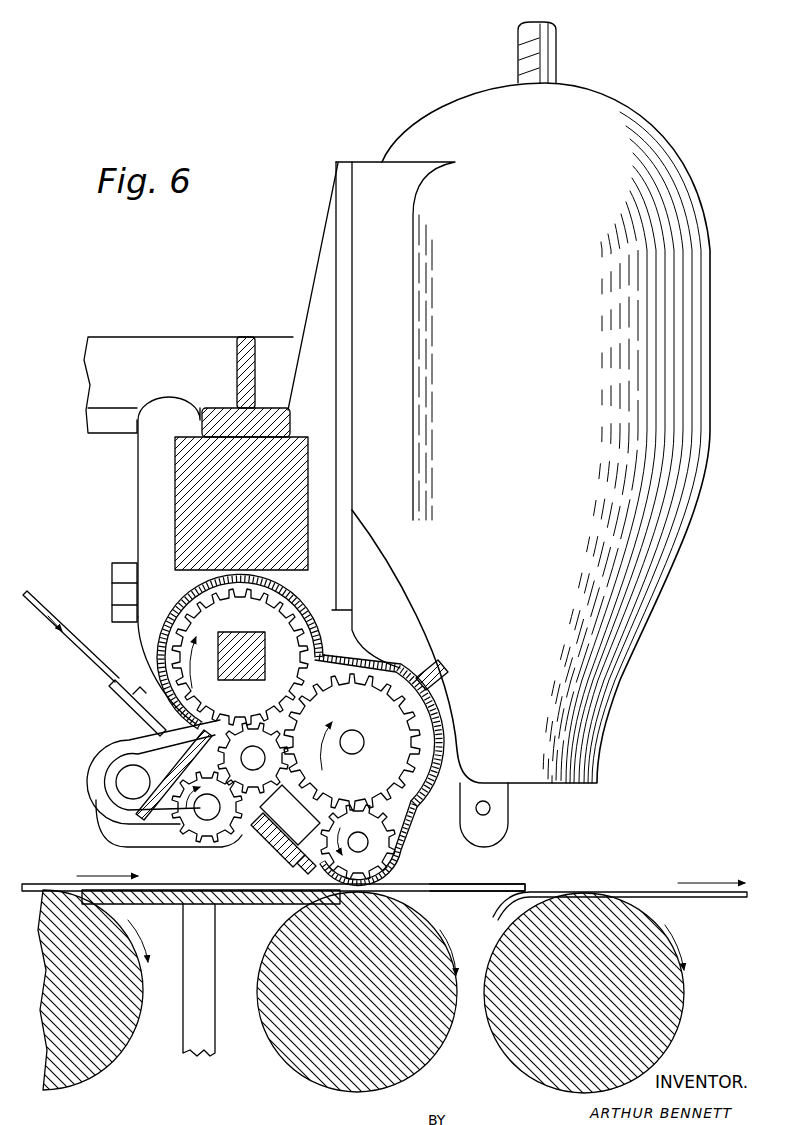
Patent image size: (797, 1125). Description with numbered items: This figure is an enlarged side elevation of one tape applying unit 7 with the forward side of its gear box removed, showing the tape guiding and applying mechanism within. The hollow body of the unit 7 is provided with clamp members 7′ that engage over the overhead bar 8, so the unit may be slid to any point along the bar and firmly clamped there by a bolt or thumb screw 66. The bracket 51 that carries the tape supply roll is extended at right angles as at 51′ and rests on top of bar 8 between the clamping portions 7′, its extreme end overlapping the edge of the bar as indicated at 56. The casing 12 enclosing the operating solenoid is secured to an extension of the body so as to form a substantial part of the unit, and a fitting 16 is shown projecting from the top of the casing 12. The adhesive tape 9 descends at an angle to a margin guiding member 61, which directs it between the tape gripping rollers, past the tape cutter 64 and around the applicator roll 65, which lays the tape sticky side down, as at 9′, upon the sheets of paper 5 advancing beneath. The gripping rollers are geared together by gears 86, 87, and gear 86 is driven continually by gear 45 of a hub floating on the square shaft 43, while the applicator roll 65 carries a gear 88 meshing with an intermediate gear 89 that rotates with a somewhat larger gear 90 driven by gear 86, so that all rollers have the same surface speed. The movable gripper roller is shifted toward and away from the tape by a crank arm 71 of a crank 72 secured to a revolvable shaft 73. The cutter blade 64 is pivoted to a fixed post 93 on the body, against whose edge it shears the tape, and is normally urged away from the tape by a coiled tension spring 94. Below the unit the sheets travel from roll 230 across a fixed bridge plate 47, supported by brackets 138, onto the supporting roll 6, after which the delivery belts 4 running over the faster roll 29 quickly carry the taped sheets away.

The knob 16 is at (557, 52).
The casing 12 is at (650, 138).
The bracket 51 is at (95, 373).
The right-angle extension of bracket 51′ is at (257, 338).
The overlapping end of bracket 56 is at (284, 355).
The clamp members 7′ is at (148, 465).
The overhead bar 8 is at (178, 488).
The bolt or thumb screw 66 is at (112, 575).
The adhesive tape 9 is at (46, 608).
The larger gear 90 is at (368, 688).
The applicator roll 65 is at (413, 866).
The coiled tension spring 94 is at (447, 682).
The gear 45 is at (240, 657).
The square shaft 43 is at (240, 632).
The intermediate gear 89 is at (352, 742).
The gear of applicator roll 88 is at (392, 866).
The gear 86 is at (228, 752).
The gear 87 is at (207, 823).
The crank 72 is at (100, 807).
The revolvable shaft 73 is at (117, 780).
The crank arm 71 is at (172, 850).
The margin guiding member 61 is at (110, 688).
The tape applying unit 7 is at (80, 745).
The fixed post or shear block 93 is at (290, 815).
The tape cutter or blade 64 is at (272, 858).
The sheets of paper 5 is at (36, 884).
The applied tape 9′ is at (506, 884).
The delivery belts 4 is at (732, 897).
The bridge plate 47 is at (182, 905).
The brackets 138 is at (206, 1053).
The roll 230 is at (85, 1078).
The supporting roll 6 is at (440, 1046).
The roll 29 is at (668, 1052).